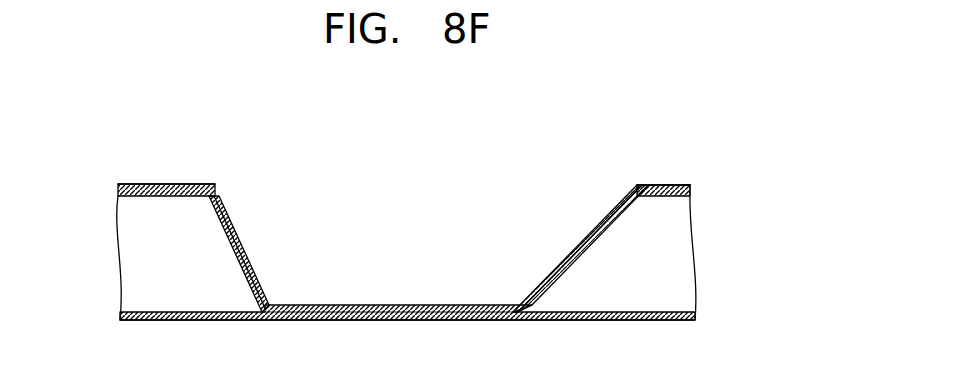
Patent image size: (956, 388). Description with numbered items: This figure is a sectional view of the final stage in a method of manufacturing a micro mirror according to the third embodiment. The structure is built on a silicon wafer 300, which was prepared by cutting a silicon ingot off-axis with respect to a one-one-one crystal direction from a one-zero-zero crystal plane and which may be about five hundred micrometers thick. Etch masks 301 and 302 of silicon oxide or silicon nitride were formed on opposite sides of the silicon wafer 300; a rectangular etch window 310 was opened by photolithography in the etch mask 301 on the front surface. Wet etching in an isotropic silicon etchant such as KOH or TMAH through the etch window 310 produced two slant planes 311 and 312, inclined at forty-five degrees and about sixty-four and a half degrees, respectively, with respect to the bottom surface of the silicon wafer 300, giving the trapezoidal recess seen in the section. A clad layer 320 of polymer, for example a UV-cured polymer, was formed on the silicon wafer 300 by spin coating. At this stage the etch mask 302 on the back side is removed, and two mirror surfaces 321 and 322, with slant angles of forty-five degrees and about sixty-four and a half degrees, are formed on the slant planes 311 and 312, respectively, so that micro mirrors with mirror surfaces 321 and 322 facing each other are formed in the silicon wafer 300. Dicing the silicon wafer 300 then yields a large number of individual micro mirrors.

The silicon wafer 300 is at (665, 230).
The etch mask 301 is at (690, 192).
The etch mask 302 is at (690, 318).
The etch window 310 is at (213, 190).
The slant plane 311 is at (590, 242).
The slant plane 312 is at (232, 234).
The clad layer 320 is at (690, 185).
The mirror surface 321 is at (610, 212).
The mirror surface 322 is at (233, 232).